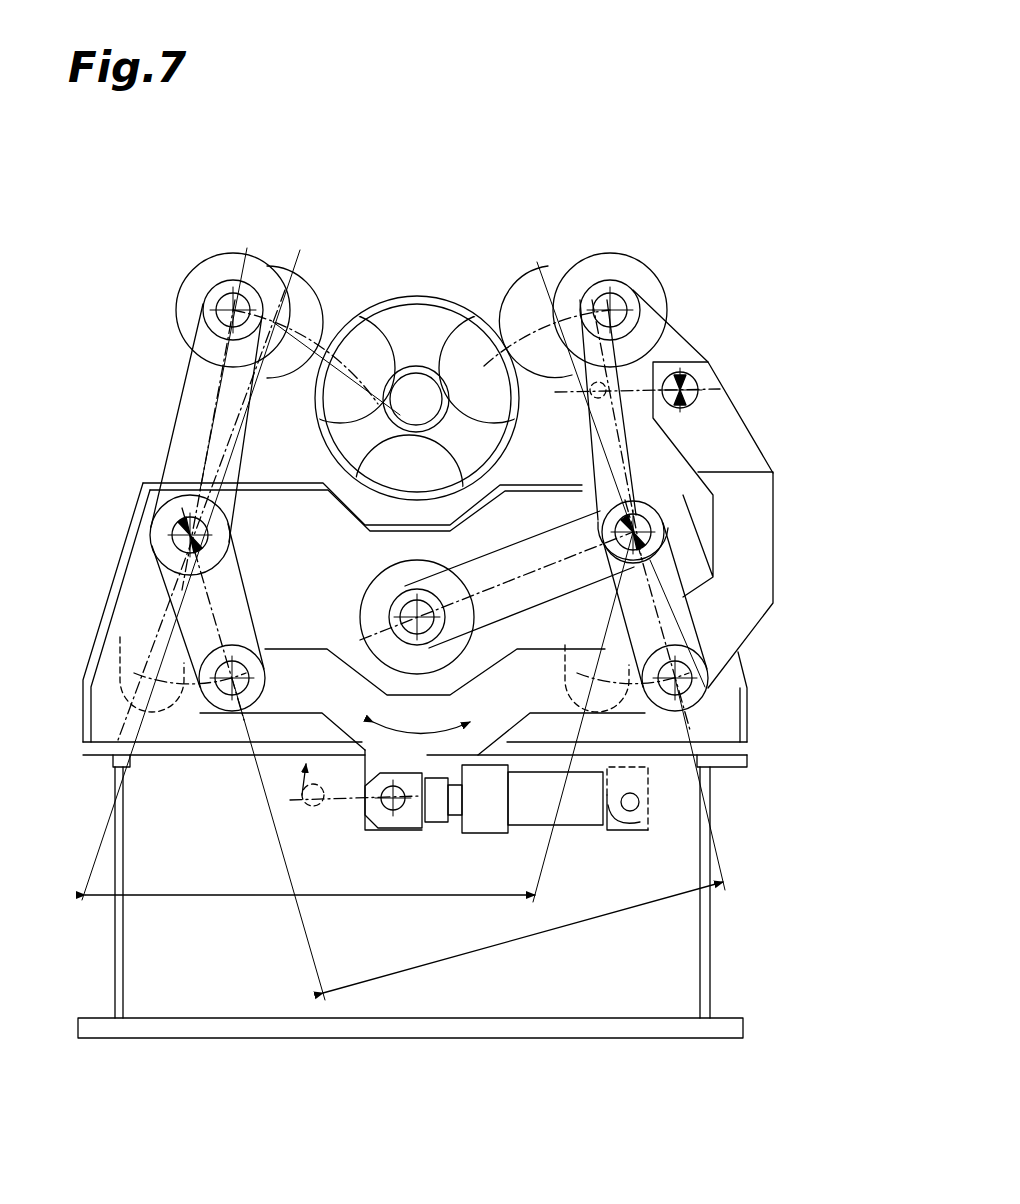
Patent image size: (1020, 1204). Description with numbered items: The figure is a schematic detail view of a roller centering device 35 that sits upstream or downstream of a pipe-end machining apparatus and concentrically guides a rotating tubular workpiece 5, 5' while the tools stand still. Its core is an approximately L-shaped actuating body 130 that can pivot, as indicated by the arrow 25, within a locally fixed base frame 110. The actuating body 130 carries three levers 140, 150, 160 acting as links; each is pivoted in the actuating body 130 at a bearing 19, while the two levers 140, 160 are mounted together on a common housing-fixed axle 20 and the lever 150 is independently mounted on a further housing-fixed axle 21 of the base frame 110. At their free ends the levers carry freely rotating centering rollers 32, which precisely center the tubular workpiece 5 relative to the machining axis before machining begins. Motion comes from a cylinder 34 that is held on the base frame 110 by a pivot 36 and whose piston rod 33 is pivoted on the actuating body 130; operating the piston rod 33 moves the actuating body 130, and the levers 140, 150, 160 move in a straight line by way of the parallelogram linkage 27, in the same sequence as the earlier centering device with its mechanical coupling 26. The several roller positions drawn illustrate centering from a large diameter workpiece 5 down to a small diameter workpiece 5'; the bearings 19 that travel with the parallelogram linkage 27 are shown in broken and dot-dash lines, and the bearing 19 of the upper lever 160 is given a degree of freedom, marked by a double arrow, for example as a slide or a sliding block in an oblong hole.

The roller centering device 35 is at (650, 152).
The centering rollers 32 is at (207, 262).
The tubular workpiece 5 is at (417, 380).
The tubular workpiece (small diameter) 5' is at (416, 372).
The lever 150 is at (197, 413).
The housing-fixed axle 21 is at (172, 522).
The bearings 19 is at (690, 374).
The lever 160 is at (667, 347).
The actuating body 130 is at (727, 450).
The housing-fixed axle 20 is at (665, 520).
The lever 140 is at (650, 587).
The base frame 110 is at (108, 598).
The mechanical coupling 26 is at (300, 790).
The arrow 25 is at (422, 773).
The piston rod 33 is at (455, 802).
The cylinder 34 is at (563, 810).
The pivot 36 is at (632, 808).
The parallelogram linkage 27 is at (268, 897).